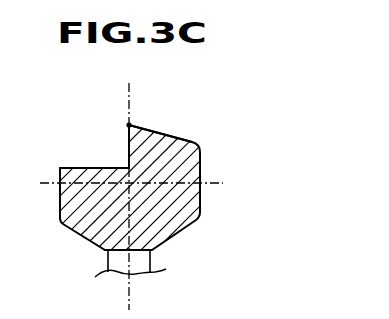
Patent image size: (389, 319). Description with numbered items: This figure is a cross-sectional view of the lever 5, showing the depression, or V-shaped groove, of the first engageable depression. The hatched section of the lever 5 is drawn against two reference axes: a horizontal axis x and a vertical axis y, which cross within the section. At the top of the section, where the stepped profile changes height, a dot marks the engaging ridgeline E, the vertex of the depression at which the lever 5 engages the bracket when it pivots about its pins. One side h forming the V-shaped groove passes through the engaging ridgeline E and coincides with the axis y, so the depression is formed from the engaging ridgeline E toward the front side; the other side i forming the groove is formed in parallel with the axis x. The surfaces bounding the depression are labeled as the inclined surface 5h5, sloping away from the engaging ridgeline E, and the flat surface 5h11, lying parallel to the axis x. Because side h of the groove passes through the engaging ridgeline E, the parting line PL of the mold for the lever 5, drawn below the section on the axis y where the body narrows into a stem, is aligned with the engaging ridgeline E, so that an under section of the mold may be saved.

The lever 5 is at (72, 199).
The surface of the first engageable depression 5h5 is at (182, 140).
The surface of the first engageable depression 5h11 is at (93, 168).
The side of the V-shaped groove h is at (128, 142).
The side of the V-shaped groove i is at (66, 168).
The engaging ridgeline E is at (130, 124).
The axis x is at (142, 182).
The axis y is at (129, 182).
The parting line PL is at (130, 288).